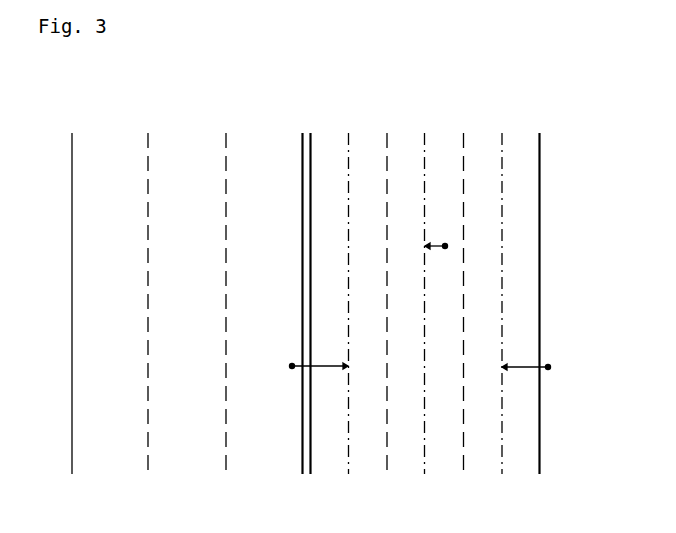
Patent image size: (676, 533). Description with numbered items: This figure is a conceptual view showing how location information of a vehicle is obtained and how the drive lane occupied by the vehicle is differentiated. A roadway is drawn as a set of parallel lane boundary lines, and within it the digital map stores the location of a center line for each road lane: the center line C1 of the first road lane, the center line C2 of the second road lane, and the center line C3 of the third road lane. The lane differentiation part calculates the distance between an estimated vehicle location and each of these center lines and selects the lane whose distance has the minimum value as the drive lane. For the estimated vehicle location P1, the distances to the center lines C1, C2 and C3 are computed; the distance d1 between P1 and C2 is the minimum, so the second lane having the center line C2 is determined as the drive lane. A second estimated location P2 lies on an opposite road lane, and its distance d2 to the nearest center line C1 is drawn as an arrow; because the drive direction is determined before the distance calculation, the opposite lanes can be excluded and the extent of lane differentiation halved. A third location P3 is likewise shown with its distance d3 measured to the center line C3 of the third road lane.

The center line of first road lane C1 is at (348, 148).
The center line of second road lane C2 is at (424, 148).
The center line of third road lane C3 is at (502, 148).
The estimated vehicle location P1 is at (449, 238).
The estimated vehicle location on opposite road lane P2 is at (284, 367).
The third point P3 is at (556, 368).
The distance between P1 and C2 d1 is at (432, 248).
The second distance d2 is at (323, 368).
The third distance d3 is at (524, 365).